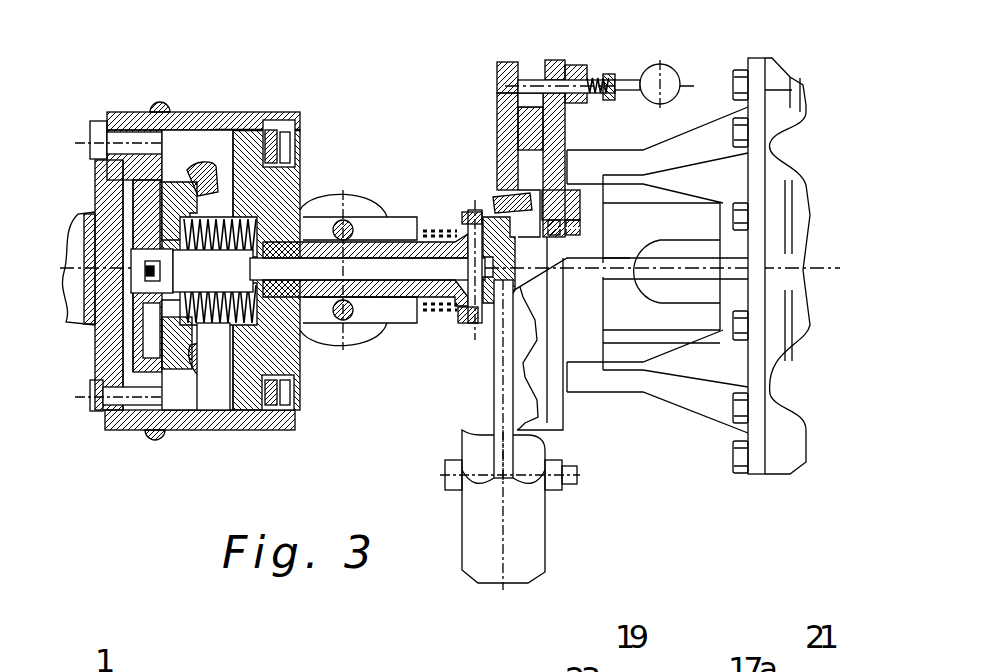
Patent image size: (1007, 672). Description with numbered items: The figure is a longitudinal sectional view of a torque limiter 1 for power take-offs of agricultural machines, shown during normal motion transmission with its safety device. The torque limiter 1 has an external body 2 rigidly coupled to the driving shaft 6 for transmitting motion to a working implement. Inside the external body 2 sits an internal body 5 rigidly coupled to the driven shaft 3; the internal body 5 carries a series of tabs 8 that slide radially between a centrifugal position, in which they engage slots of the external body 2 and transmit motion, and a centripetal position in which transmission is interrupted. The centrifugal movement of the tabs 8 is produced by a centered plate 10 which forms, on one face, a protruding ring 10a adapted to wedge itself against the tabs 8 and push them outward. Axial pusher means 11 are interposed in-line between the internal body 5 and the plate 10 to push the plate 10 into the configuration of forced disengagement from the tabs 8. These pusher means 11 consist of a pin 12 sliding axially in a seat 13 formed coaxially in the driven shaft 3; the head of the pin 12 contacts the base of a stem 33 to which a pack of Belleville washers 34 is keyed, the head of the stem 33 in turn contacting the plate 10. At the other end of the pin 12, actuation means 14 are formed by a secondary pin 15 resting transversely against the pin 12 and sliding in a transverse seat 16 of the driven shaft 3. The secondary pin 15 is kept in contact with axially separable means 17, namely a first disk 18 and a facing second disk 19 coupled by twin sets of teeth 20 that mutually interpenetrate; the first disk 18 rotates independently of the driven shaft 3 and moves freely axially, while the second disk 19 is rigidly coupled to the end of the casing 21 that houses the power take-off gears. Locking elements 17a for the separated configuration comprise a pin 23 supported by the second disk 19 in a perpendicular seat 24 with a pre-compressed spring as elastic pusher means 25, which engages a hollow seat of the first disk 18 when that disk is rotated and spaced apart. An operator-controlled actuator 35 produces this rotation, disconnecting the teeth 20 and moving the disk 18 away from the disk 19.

The torque limiter 1 is at (70, 133).
The external body 2 is at (216, 116).
The driven shaft 3 is at (385, 240).
The internal body 5 is at (285, 184).
The driving shaft 6 is at (80, 250).
The tabs 8 is at (185, 158).
The centered plate 10 is at (153, 313).
The protruding ring 10a is at (190, 193).
The axial pusher means 11 is at (377, 292).
The pin 12 is at (320, 270).
The seat 13 is at (475, 200).
The actuation means 14 is at (475, 195).
The secondary pin 15 is at (483, 305).
The transverse seat 16 is at (470, 300).
The axially separable means 17 is at (602, 480).
The locking elements 17a is at (690, 57).
The first disk 18 is at (505, 75).
The second disk 19 is at (560, 84).
The twin sets of teeth 20 is at (542, 357).
The casing 21 is at (756, 497).
The pin 23 is at (578, 84).
The perpendicular seat 24 is at (588, 100).
The elastic pusher means 25 is at (612, 80).
The stem 33 is at (203, 277).
The pack of Belleville washers 34 is at (240, 407).
The actuator 35 is at (492, 598).